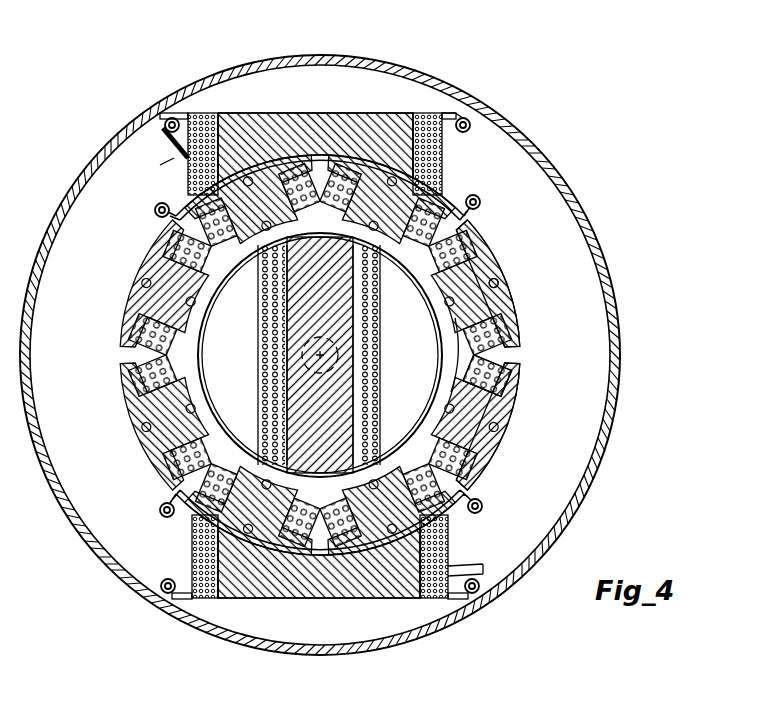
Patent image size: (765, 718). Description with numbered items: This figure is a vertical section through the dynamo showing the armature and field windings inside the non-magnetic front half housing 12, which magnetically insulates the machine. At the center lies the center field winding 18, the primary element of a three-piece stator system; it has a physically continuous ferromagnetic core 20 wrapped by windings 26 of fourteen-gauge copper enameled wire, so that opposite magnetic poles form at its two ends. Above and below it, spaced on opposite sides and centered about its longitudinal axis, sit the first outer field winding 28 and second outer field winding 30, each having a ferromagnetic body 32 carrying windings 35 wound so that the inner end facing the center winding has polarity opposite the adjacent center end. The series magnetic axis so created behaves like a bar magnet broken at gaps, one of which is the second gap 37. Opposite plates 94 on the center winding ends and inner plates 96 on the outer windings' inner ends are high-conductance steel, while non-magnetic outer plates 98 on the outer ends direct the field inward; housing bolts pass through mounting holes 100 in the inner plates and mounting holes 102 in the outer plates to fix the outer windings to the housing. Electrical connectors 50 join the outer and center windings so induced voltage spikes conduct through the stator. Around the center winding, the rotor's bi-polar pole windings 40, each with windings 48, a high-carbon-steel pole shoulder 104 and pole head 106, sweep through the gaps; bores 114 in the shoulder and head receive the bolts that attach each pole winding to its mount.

The front half housing 12 is at (598, 238).
The center field winding 18 is at (292, 333).
The ferromagnetic core 20 is at (311, 321).
The windings 26 is at (275, 425).
The first outer field winding 28 is at (291, 135).
The second outer field winding 30 is at (399, 574).
The ferromagnetic core or body 32 is at (352, 117).
The windings 35 is at (192, 112).
The second gap 37 is at (506, 446).
The bi-polar pole winding 40 is at (490, 426).
The windings 48 is at (482, 210).
The electrical connectors 50 is at (173, 157).
The opposite plates 94 is at (407, 436).
The inner plates 96 is at (172, 201).
The outer plates 98 is at (427, 112).
The mounting holes 100 is at (153, 209).
The mounting holes 102 is at (478, 115).
The pole shoulder 104 is at (448, 322).
The pole head 106 is at (448, 322).
The bores 114 is at (506, 266).